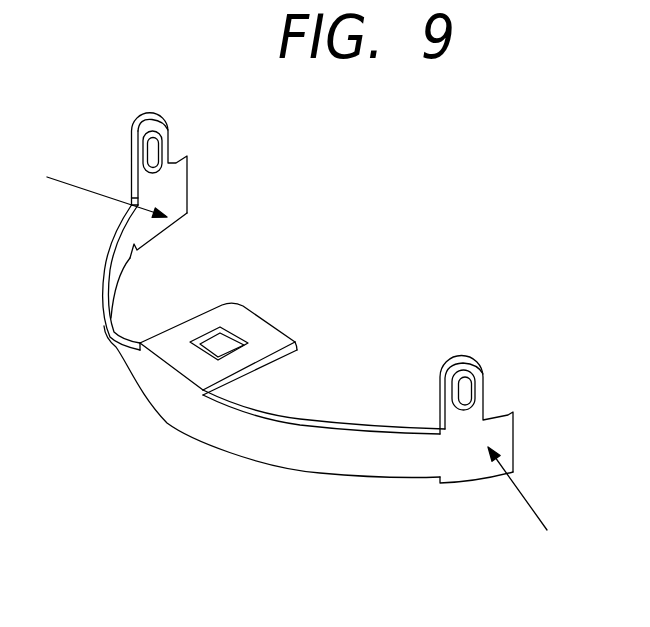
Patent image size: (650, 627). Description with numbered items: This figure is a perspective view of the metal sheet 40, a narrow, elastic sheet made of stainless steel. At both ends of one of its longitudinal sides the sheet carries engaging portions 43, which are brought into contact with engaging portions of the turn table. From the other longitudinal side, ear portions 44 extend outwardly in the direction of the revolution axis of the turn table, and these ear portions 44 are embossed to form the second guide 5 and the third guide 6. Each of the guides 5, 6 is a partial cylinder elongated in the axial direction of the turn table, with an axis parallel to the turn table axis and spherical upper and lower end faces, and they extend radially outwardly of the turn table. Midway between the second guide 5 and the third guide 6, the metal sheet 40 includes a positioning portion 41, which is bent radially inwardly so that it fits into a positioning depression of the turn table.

The second guide 5 is at (150, 151).
The third guide 6 is at (470, 379).
The metal sheet 40 is at (337, 440).
The positioning portion 41 is at (258, 327).
The engaging portion 43 is at (152, 230).
The ear portion 44 is at (170, 148).